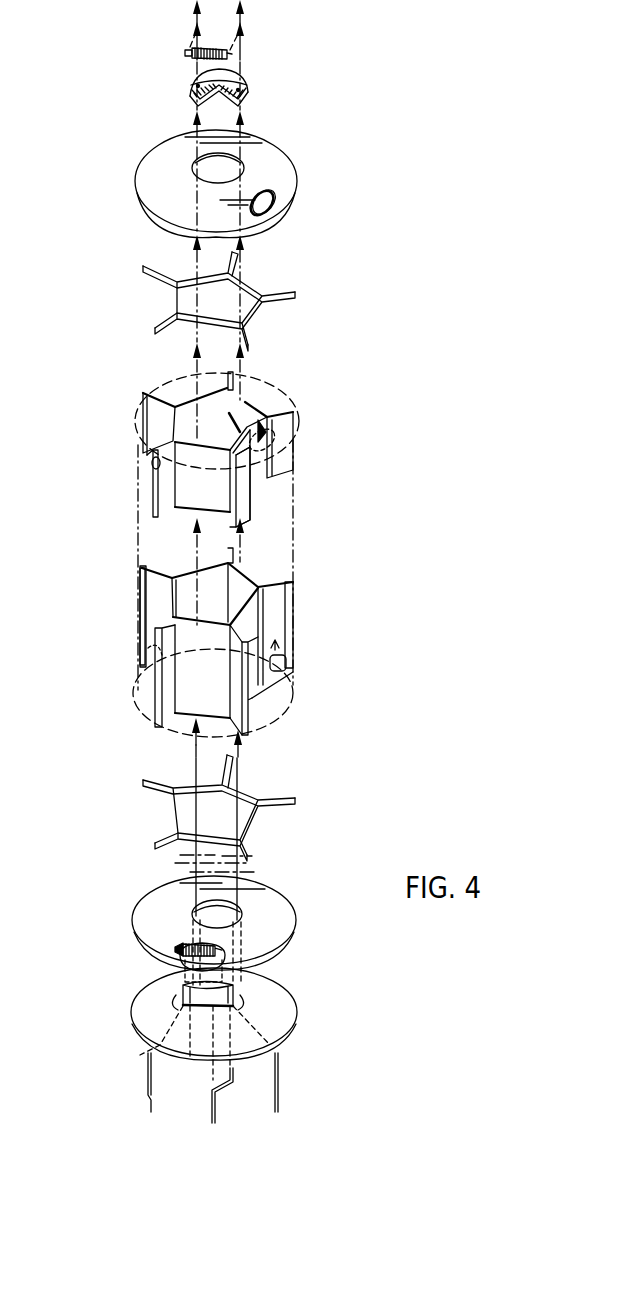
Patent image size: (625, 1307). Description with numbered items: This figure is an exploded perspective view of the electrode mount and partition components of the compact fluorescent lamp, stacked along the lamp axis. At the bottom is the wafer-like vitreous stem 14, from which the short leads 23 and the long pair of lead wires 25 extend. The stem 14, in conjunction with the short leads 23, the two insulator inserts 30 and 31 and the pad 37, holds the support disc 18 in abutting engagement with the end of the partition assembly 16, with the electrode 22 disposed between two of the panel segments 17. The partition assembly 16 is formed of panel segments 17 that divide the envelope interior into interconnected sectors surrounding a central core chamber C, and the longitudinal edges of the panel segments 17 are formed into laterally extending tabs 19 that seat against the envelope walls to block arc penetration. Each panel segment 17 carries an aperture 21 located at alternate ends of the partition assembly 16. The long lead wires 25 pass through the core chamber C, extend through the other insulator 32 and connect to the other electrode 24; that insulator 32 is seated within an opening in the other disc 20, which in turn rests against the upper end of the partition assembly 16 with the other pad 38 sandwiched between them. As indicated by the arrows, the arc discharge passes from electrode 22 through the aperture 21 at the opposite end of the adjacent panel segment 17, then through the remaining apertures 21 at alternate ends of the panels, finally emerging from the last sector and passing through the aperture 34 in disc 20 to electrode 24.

The vitreous stem 14 is at (152, 1000).
The partition assembly 16 is at (150, 505).
The panel segments 17 is at (152, 410).
The disc member 18 is at (150, 688).
The tabs 19 is at (252, 518).
The disc member 20 is at (160, 188).
The aperture 21 is at (233, 405).
The thermionic electrode 22 is at (185, 950).
The short lead-in wires 23 is at (212, 1110).
The thermionic electrode 24 is at (196, 58).
The long lead wires 25 is at (236, 903).
The insulator insert 30 is at (235, 957).
The insulator insert 31 is at (212, 916).
The insulator 32 is at (200, 90).
The aperture 34 is at (275, 202).
The pad 37 is at (272, 800).
The pad 38 is at (265, 297).
The central chamber C is at (210, 607).